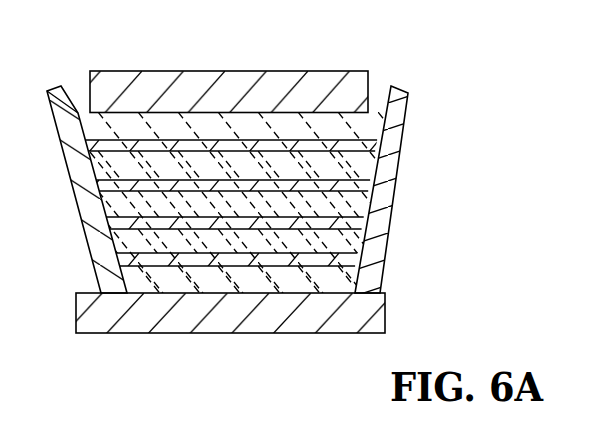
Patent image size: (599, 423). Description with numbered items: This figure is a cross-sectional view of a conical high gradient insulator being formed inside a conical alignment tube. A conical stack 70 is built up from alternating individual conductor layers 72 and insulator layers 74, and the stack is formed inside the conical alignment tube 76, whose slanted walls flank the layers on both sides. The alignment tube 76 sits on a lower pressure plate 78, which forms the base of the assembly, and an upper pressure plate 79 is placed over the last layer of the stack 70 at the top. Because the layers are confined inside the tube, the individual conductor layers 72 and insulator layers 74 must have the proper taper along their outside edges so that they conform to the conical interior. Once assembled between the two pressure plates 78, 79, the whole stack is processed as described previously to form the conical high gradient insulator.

The conical stack 70 is at (347, 43).
The conductor layers 72 is at (113, 226).
The insulator layers 74 is at (345, 167).
The conical alignment tube 76 is at (400, 133).
The lower pressure plate 78 is at (76, 314).
The upper pressure plate 79 is at (202, 70).